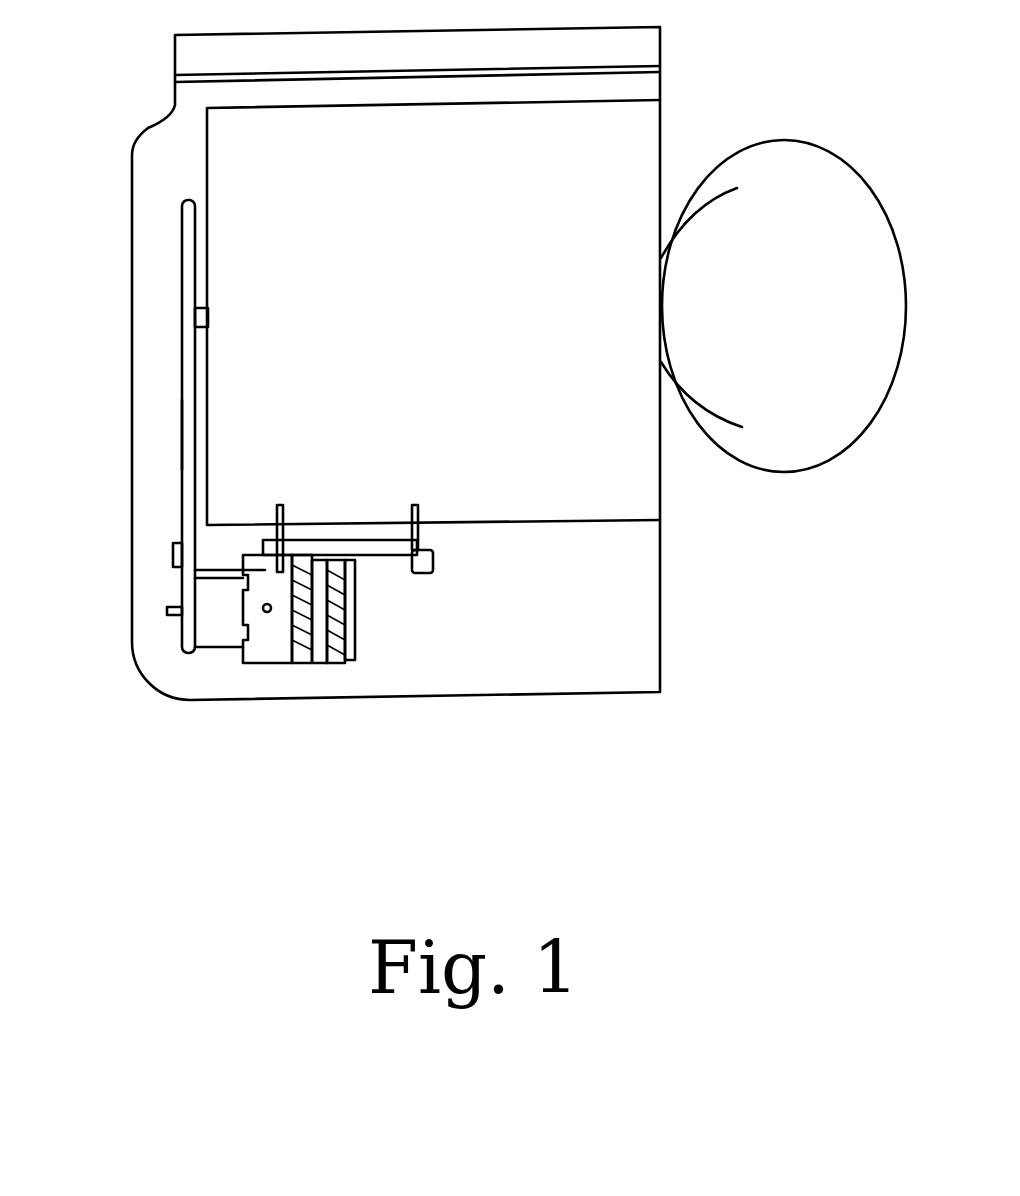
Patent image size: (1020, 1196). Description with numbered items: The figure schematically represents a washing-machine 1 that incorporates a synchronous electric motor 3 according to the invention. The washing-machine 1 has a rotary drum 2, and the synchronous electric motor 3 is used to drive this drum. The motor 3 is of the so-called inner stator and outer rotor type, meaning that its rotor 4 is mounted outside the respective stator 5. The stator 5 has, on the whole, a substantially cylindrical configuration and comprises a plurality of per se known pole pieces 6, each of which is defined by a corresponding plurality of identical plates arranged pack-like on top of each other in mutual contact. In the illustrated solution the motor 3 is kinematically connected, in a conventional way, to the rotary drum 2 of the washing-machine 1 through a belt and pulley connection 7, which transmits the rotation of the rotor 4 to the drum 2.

The washing-machine 1 is at (663, 103).
The rotary drum 2 is at (398, 323).
The synchronous electric motor 3 is at (210, 603).
The rotor 4 is at (178, 574).
The stator 5 is at (350, 612).
The pole pieces 6 is at (194, 270).
The belt and pulley connection 7 is at (183, 440).